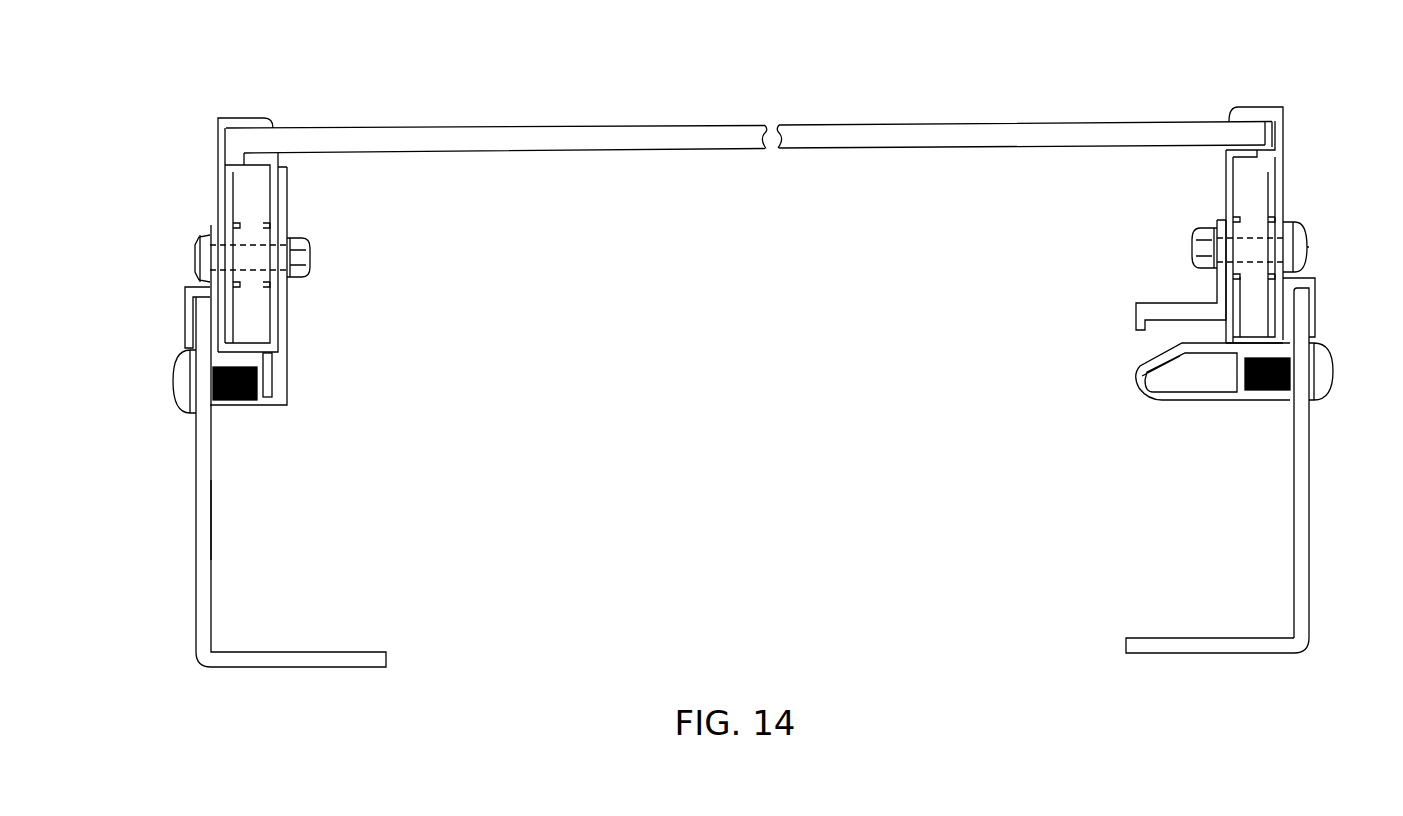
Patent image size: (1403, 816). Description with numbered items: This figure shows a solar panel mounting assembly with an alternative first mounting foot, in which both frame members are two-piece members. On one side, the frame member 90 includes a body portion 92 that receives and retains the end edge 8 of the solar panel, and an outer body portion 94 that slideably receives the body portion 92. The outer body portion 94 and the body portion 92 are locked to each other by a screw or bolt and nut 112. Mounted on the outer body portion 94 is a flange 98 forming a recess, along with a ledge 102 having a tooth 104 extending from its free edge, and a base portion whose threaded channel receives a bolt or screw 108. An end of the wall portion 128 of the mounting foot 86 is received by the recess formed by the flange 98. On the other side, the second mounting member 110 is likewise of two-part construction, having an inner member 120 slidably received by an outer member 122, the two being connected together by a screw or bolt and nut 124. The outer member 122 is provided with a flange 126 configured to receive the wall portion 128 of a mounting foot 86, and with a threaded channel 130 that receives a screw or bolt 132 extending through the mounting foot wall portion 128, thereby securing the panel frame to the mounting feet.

The first end edge 8 is at (1238, 113).
The mounting foot 86 is at (1312, 490).
The frame member 90 is at (1190, 249).
The body portion 92 is at (1226, 170).
The outer body portion 94 is at (1292, 225).
The flange 98 is at (1318, 318).
The ledge 102 is at (1168, 303).
The tooth 104 is at (1130, 320).
The bolt or screw 108 is at (1333, 378).
The second mounting member 110 is at (316, 247).
The screw or bolt and nut 112 is at (1310, 250).
The inner member 120 is at (218, 188).
The outer member 122 is at (287, 323).
The screw or bolt and nut 124 is at (196, 257).
The flange 126 is at (186, 307).
The wall portion 128 is at (196, 517).
The threaded channel 130 is at (238, 402).
The screw or bolt 132 is at (184, 398).